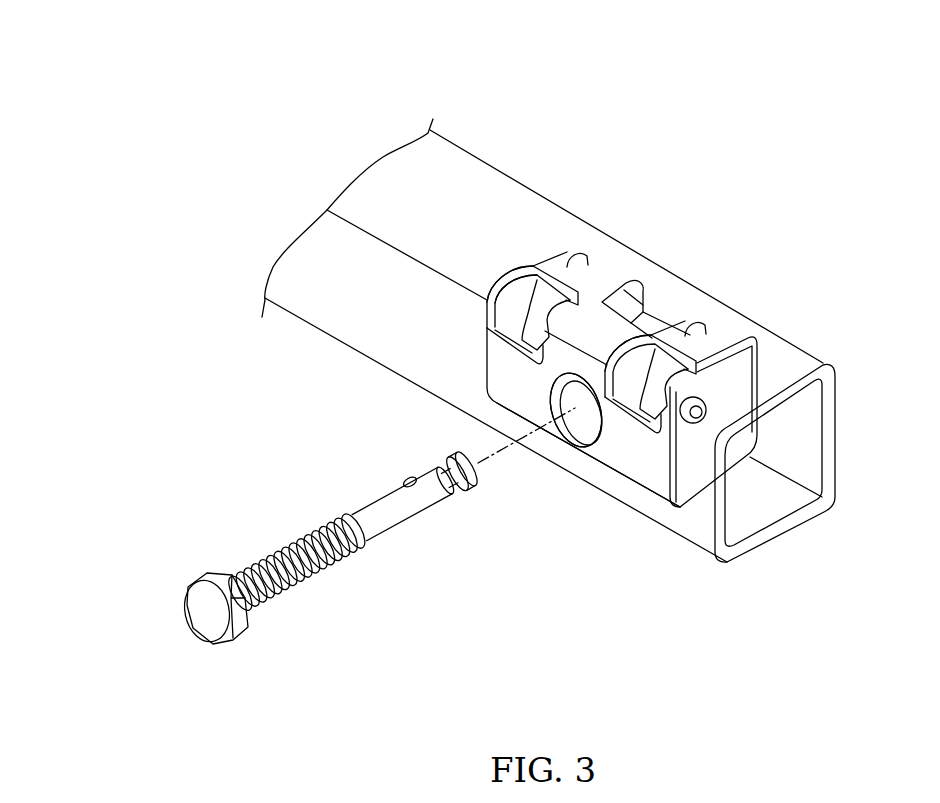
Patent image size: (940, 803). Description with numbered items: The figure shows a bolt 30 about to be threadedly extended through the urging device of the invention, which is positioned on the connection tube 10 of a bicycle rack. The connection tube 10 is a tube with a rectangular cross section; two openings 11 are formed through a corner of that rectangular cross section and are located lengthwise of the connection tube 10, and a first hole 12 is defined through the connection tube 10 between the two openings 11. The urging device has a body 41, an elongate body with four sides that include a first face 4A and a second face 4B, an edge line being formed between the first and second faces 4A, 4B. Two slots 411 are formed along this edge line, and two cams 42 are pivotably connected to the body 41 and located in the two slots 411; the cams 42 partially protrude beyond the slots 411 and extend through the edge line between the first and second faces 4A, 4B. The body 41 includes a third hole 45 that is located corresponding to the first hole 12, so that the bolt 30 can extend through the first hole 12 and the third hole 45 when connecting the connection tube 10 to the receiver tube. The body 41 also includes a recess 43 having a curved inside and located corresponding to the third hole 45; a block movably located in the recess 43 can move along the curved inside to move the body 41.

The connection tube 10 is at (439, 158).
The openings 11 is at (533, 310).
The first hole 12 is at (563, 412).
The third hole 45 is at (575, 409).
The bolt 30 is at (205, 576).
The body 41 is at (626, 480).
The cams 42 is at (552, 285).
The recess 43 is at (641, 292).
The slots 411 is at (516, 282).
The first face 4A is at (490, 385).
The second face 4B is at (608, 290).